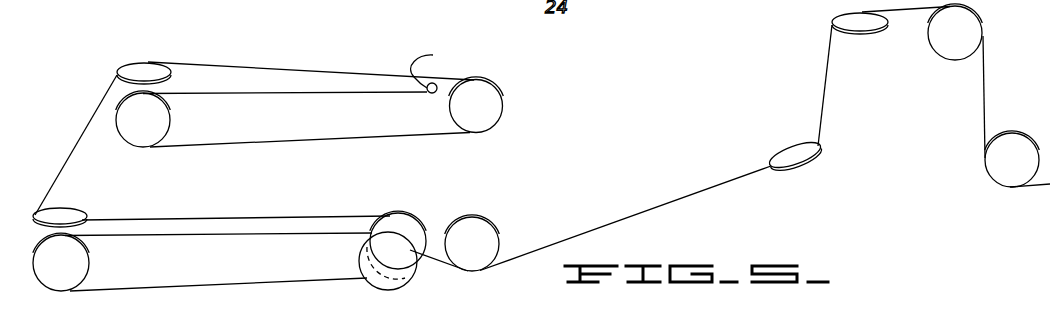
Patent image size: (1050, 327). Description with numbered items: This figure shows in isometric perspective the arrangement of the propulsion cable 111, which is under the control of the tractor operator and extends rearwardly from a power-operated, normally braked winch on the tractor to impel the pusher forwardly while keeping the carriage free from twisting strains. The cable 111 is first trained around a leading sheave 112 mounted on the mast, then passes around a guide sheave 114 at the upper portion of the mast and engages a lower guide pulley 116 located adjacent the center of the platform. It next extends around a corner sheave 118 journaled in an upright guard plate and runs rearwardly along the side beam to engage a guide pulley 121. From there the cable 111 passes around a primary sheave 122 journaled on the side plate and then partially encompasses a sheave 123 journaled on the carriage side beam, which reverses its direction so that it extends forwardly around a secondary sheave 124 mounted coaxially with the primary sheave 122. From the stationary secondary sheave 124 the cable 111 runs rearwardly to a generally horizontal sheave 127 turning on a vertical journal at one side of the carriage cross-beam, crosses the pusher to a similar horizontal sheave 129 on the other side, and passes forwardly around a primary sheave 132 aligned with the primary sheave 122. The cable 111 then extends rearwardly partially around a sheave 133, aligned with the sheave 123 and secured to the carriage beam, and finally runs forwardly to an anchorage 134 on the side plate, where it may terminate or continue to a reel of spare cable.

The propulsion cable 111 is at (319, 93).
The leading sheave 112 is at (1013, 138).
The guide sheave 114 is at (973, 37).
The lower guide pulley 116 is at (875, 26).
The corner sheave 118 is at (793, 130).
The guide pulley 121 is at (492, 240).
The primary sheave 122 is at (367, 270).
The sheave 123 is at (47, 278).
The secondary sheave 124 is at (413, 237).
The horizontal sheave 127 is at (78, 212).
The sheave 129 is at (148, 68).
The primary sheave 132 is at (498, 100).
The sheave 133 is at (163, 128).
The anchorage 134 is at (436, 84).